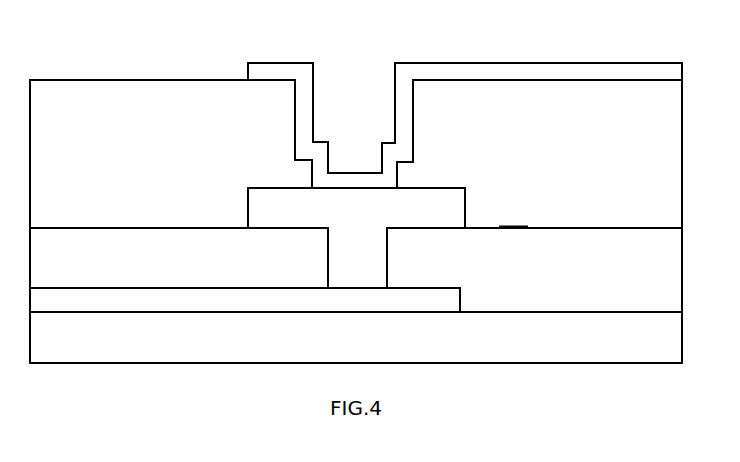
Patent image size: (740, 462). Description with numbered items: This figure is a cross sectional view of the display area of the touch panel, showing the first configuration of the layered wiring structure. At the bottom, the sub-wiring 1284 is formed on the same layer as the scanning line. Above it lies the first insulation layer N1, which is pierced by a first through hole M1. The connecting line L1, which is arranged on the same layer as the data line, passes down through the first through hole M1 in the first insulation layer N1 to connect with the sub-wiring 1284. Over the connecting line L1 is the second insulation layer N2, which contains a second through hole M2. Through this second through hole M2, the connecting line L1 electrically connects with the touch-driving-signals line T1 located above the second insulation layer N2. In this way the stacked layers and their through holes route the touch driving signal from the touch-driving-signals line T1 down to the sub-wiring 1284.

The sub-wiring 1284 is at (243, 302).
The first through hole M1 is at (358, 286).
The first insulation layer N1 is at (135, 230).
The connecting line L1 is at (248, 202).
The second insulation layer N2 is at (135, 97).
The touch-driving-signals line T1 is at (283, 72).
The second through hole M2 is at (368, 167).